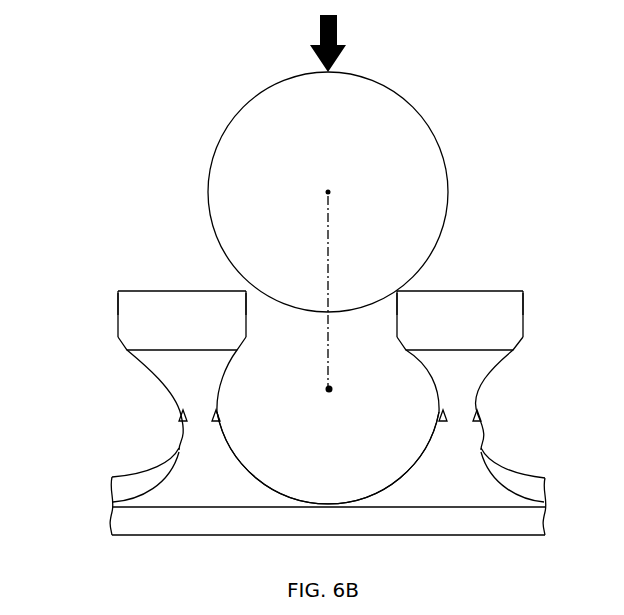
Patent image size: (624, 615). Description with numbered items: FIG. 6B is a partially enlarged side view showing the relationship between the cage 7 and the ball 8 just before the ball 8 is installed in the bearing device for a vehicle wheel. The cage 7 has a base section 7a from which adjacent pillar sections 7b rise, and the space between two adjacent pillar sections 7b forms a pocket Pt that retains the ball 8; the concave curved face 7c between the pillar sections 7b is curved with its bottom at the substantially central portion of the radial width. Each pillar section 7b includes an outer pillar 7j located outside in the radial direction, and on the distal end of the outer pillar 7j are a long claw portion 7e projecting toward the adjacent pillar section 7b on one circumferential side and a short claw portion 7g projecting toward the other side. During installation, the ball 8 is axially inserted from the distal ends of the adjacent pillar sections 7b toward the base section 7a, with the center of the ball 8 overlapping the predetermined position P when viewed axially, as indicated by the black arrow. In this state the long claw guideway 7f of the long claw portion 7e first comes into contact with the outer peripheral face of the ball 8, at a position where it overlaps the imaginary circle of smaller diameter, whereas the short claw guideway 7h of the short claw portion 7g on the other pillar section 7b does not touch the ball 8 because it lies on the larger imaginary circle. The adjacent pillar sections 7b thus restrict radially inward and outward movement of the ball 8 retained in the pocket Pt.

The cage 7 is at (292, 366).
The base section 7a is at (113, 522).
The pillar section 7b is at (322, 277).
The concave curved face 7c is at (368, 492).
The long claw portion 7e is at (118, 323).
The long claw guideway 7f is at (122, 308).
The short claw portion 7g is at (247, 323).
The short claw guideway 7h is at (244, 308).
The outer pillar 7j is at (182, 291).
The ball 8 is at (209, 188).
The predetermined position P is at (333, 389).
The pocket Pt is at (265, 424).